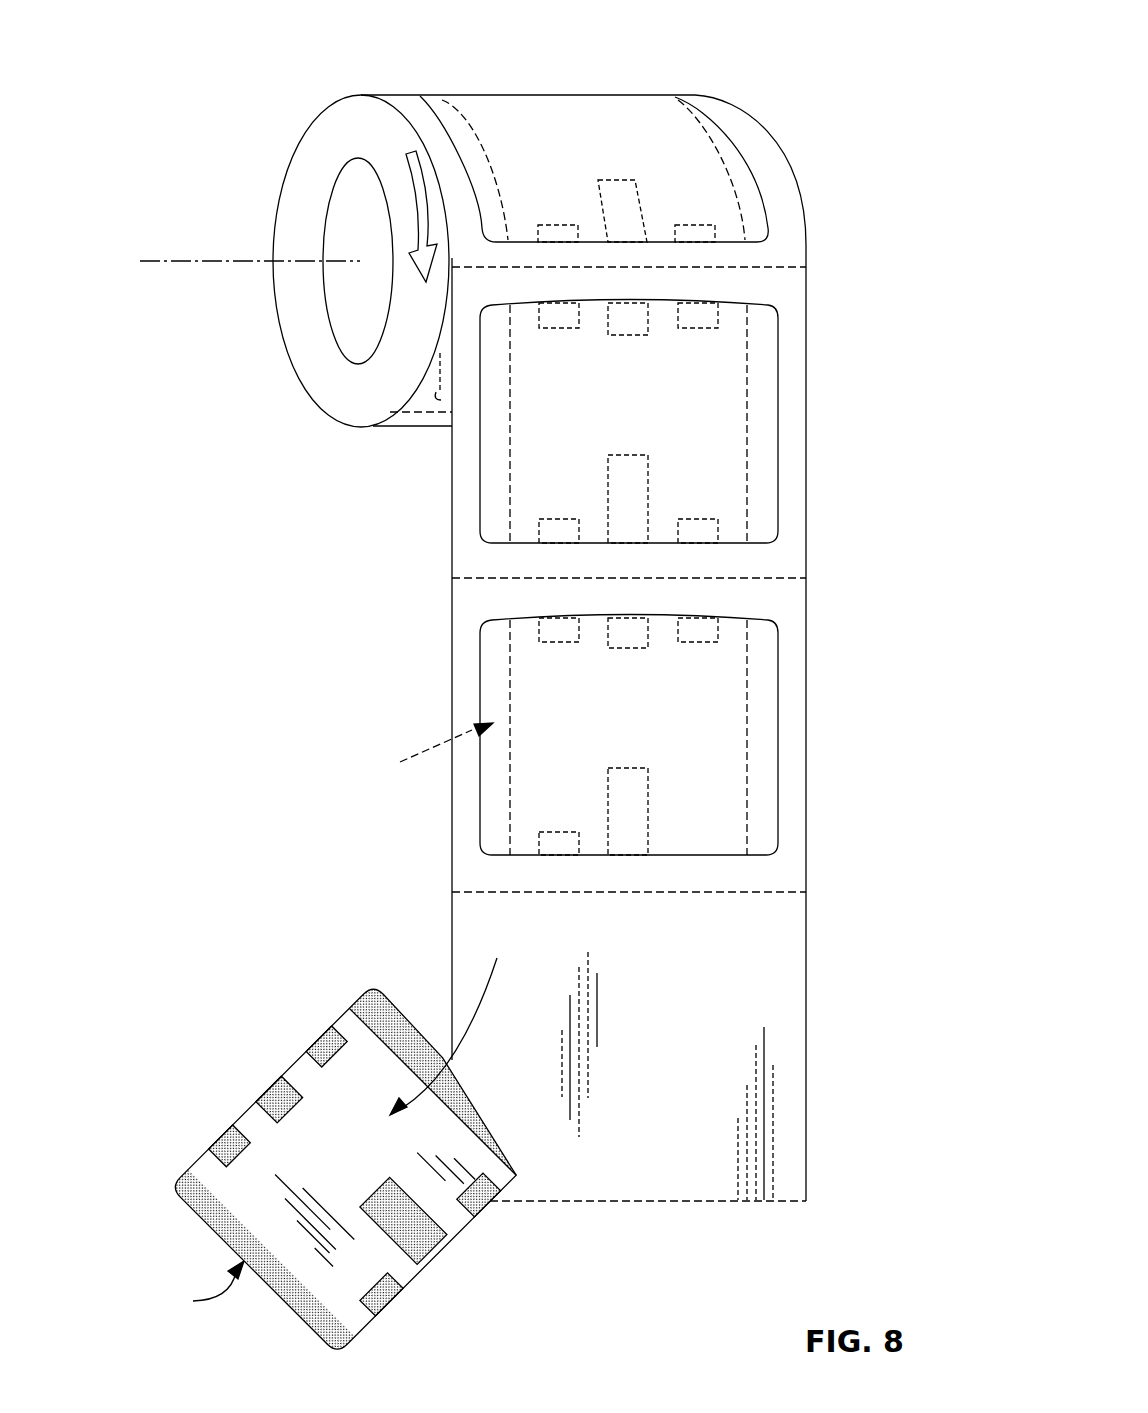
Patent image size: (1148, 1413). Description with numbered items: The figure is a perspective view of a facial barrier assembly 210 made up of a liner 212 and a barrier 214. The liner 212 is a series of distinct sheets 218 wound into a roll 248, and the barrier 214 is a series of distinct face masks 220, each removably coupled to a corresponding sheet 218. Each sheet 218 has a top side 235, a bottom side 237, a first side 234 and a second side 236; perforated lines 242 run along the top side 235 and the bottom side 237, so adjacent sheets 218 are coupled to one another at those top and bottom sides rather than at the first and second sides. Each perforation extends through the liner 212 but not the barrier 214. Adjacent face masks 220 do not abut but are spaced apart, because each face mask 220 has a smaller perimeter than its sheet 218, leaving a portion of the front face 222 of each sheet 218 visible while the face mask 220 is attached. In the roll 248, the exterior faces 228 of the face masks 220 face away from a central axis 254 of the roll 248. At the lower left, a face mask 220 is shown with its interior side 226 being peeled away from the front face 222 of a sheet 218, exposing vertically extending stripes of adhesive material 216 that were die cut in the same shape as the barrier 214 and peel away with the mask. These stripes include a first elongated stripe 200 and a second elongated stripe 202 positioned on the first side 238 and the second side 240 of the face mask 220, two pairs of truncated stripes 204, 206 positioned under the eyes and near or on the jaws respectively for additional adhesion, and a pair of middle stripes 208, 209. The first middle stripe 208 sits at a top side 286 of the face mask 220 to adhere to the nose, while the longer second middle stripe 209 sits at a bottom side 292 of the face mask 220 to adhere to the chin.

The first elongated stripe 200 is at (378, 1003).
The second elongated stripe 202 is at (211, 1230).
The truncated stripes 204 is at (473, 1202).
The truncated stripes 206 is at (312, 1040).
The first middle stripe 208 is at (270, 1095).
The second middle stripe 209 is at (427, 1246).
The facial barrier assembly 210 is at (572, 63).
The liner 212 is at (795, 969).
The barrier 214 is at (742, 820).
The adhesive material 216 is at (317, 1020).
The sheet 218 is at (790, 338).
The face mask 220 is at (725, 415).
The front face 222 is at (465, 598).
The interior side 226 is at (306, 1140).
The exterior face 228 is at (444, 396).
The first side 234 is at (793, 473).
The top side 235 is at (752, 282).
The second side 236 is at (462, 500).
The bottom side 237 is at (752, 578).
The first side 238 is at (304, 1332).
The second side 240 is at (445, 1059).
The perforated lines 242 is at (628, 893).
The roll 248 is at (250, 156).
The central axis 254 is at (192, 262).
The top side 286 is at (247, 1107).
The bottom side 292 is at (412, 1281).